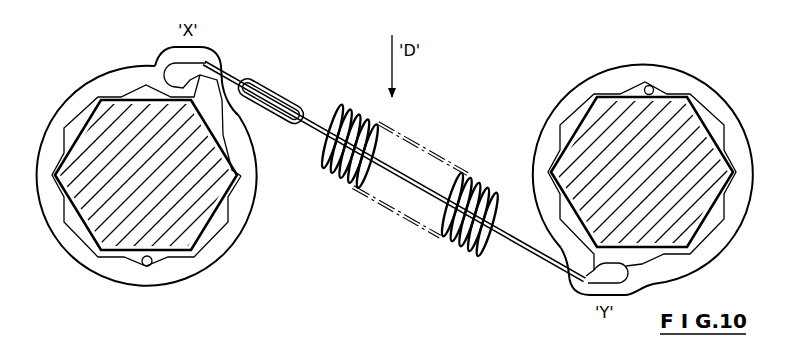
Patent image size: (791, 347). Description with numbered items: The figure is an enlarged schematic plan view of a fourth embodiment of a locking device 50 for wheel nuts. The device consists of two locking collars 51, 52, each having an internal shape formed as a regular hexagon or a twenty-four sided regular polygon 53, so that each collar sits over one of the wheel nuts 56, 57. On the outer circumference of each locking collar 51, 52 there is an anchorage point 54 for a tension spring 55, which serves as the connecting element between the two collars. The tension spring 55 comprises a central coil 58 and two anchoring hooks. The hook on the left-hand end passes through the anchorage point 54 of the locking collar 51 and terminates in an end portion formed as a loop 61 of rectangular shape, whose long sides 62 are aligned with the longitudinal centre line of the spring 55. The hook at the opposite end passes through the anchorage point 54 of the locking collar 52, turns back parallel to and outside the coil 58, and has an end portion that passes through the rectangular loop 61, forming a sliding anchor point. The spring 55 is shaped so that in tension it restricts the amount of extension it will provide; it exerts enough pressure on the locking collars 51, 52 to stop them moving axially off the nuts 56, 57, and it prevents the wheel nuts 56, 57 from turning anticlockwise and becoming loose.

The locking device 50 is at (394, 171).
The locking collar 51 is at (123, 87).
The locking collar 52 is at (737, 138).
The regular polygon 53 is at (150, 267).
The anchorage point 54 is at (213, 53).
The tension spring 55 is at (389, 168).
The wheel nut 56 is at (92, 230).
The wheel nut 57 is at (694, 193).
The central coil 58 is at (469, 215).
The loop 61 is at (270, 100).
The long sides 62 is at (271, 101).